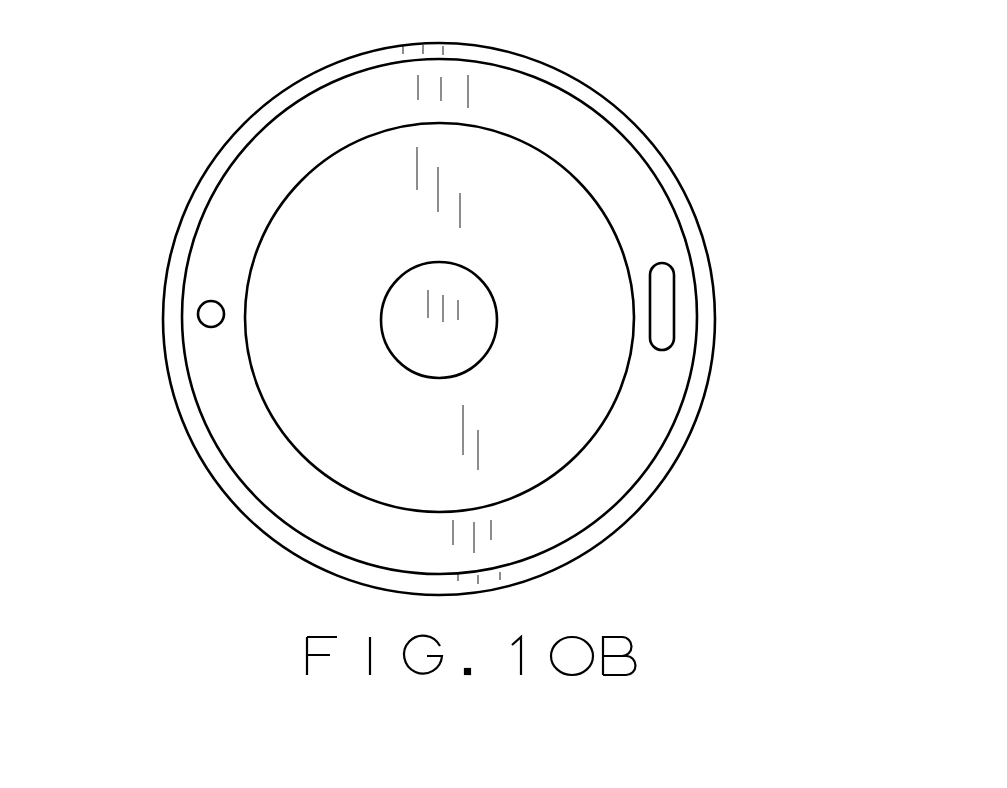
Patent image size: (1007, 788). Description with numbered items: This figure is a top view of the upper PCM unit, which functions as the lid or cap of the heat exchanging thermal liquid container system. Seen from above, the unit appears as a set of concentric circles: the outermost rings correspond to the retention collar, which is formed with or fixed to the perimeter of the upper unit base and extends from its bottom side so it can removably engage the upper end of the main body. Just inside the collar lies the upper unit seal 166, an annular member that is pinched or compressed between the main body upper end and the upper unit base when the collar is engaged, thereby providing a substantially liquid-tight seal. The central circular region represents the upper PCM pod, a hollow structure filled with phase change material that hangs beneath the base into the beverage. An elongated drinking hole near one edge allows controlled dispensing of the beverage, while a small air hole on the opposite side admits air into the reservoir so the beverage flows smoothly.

The upper unit seal 166 is at (632, 205).